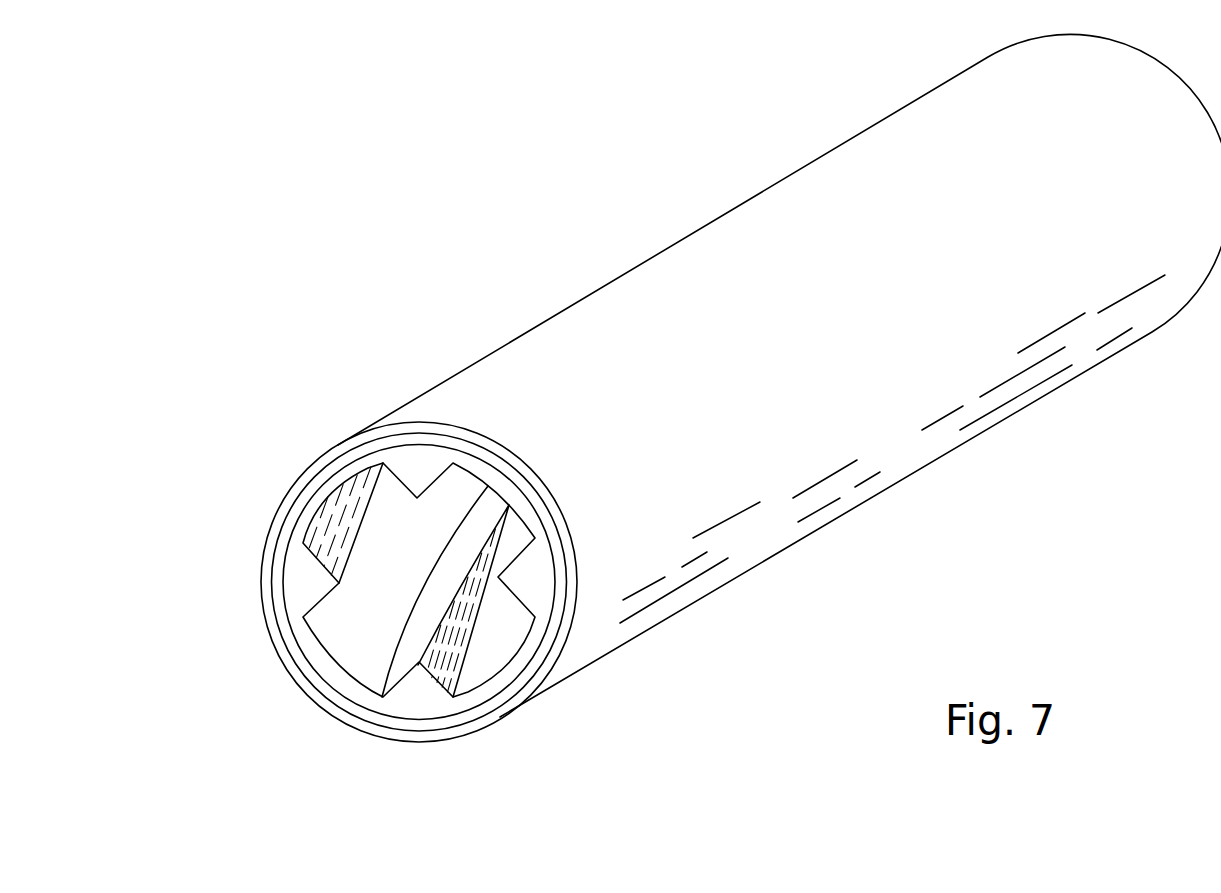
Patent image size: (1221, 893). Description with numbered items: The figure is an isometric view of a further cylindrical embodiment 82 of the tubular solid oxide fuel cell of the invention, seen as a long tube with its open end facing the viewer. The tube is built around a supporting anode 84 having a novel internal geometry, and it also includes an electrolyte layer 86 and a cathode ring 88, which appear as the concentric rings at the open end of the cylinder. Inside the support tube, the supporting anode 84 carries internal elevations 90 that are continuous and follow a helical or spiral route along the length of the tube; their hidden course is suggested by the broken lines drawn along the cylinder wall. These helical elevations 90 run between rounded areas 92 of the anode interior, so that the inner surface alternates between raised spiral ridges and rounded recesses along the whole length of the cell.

The cylindrical embodiment 82 is at (535, 204).
The supporting anode 84 is at (343, 486).
The electrolyte layer 86 is at (553, 620).
The cathode ring 88 is at (892, 167).
The elevations 90 is at (517, 578).
The rounded areas 92 is at (342, 640).